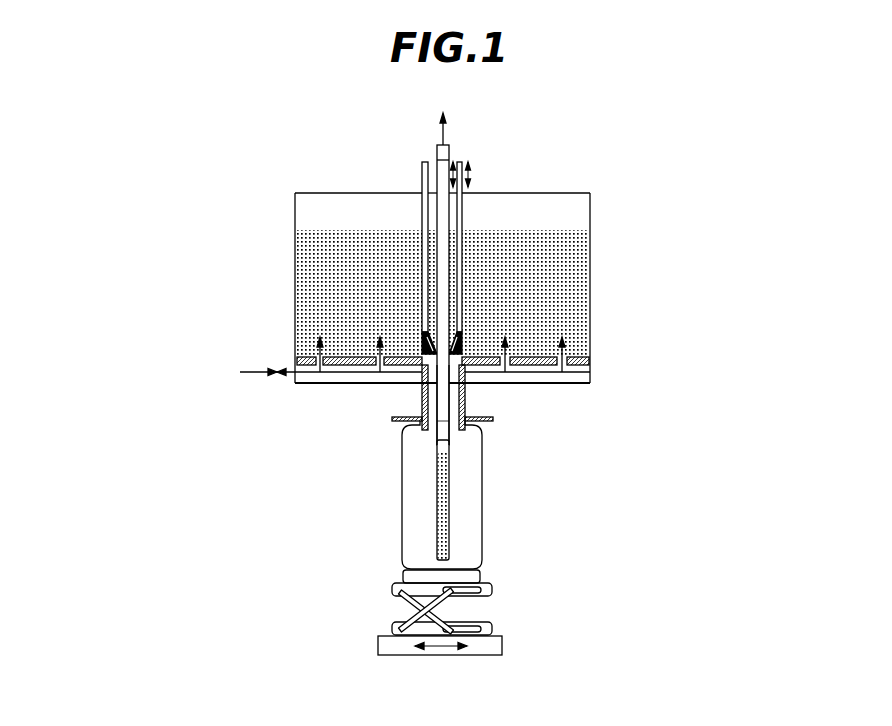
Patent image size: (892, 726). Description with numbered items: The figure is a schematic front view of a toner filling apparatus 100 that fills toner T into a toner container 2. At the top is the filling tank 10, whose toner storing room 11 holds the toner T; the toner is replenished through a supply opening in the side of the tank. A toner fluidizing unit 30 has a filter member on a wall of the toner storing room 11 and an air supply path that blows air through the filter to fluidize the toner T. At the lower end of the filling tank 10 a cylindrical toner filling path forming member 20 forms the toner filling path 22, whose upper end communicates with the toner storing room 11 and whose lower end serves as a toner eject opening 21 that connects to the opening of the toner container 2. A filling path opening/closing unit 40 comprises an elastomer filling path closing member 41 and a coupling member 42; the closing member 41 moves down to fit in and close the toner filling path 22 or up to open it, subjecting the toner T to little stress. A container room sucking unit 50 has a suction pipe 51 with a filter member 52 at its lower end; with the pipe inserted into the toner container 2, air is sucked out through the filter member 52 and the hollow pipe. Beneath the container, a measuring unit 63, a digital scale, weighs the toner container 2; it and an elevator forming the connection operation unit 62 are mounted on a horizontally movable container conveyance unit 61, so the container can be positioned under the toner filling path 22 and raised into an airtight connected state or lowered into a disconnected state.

The toner filling apparatus 100 is at (528, 125).
The filling tank 10 is at (590, 218).
The toner storing room 11 is at (547, 203).
The toner T is at (308, 262).
The toner filling path forming member 20 is at (466, 386).
The toner eject opening 21 is at (432, 430).
The toner filling path 22 is at (423, 400).
The toner fluidizing unit 30 is at (307, 372).
The filling path opening/closing unit 40 is at (463, 222).
The filling path closing member 41 is at (455, 345).
The coupling member 42 is at (423, 187).
The container room sucking unit 50 is at (444, 503).
The suction pipe 51 is at (438, 438).
The filter member 52 is at (443, 515).
The toner container 2 is at (483, 503).
The measuring unit 63 is at (470, 575).
The connection operation unit 62 is at (492, 628).
The container conveyance unit 61 is at (502, 647).